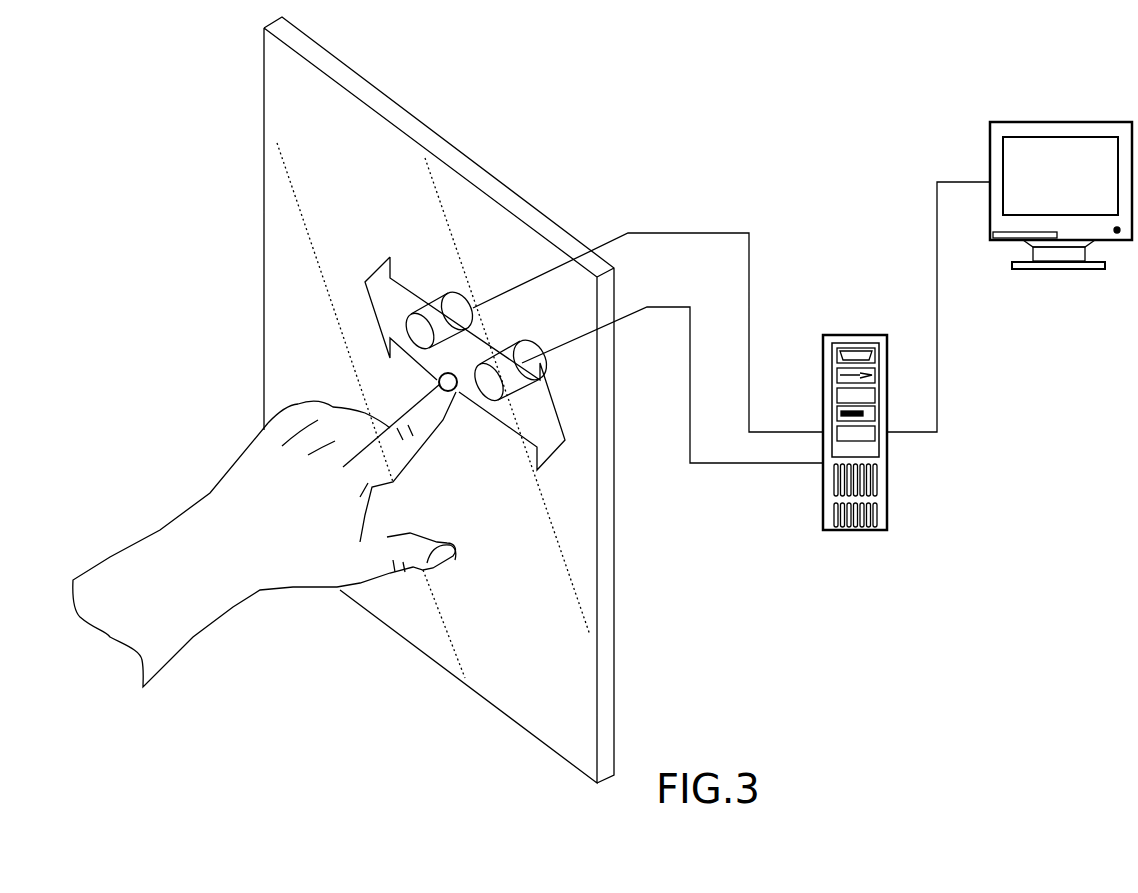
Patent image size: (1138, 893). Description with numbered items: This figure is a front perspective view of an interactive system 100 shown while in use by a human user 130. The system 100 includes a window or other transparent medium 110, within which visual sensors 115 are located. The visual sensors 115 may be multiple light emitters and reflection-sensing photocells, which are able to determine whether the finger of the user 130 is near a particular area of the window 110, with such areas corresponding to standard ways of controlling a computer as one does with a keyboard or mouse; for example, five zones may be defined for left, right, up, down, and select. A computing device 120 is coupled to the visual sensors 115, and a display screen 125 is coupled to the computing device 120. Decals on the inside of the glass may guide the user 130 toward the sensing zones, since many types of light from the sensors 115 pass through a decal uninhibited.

The interactive system 100 is at (776, 91).
The window or other transparent medium 110 is at (538, 211).
The visual sensors 115 is at (478, 290).
The computing device 120 is at (858, 334).
The display screen 125 is at (990, 142).
The human user 130 is at (226, 465).